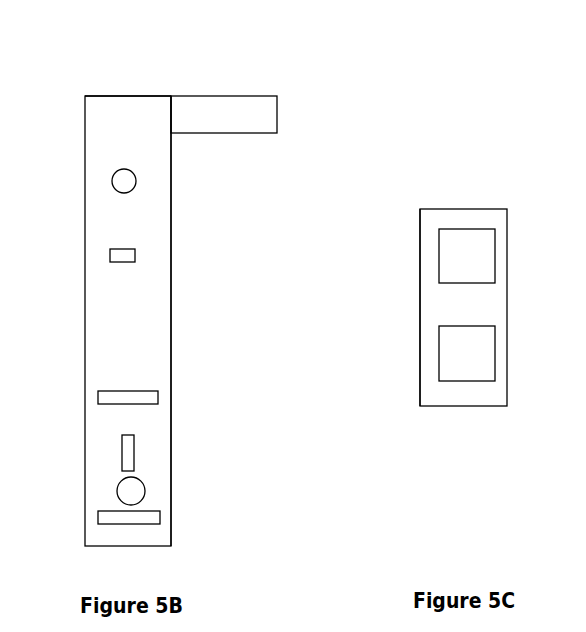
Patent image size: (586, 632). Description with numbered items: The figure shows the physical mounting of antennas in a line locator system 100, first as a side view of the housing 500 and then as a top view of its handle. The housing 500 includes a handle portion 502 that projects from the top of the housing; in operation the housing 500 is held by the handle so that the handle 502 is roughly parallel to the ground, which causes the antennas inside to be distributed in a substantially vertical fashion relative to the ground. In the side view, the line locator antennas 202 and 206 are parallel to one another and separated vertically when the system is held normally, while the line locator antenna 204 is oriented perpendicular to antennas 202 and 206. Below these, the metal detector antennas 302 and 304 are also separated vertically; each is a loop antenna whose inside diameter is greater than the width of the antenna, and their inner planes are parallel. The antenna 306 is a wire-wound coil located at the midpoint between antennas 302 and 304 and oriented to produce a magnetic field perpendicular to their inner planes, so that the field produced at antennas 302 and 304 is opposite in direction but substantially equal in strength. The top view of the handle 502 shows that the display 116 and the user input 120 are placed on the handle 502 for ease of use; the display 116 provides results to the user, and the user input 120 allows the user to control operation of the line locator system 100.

In FIG. 5B, the line locator system 100 is at (80, 107).
In FIG. 5C, the line locator system 100 is at (514, 229).
In FIG. 5B, the housing 500 is at (117, 96).
In FIG. 5B, the handle portion 502 is at (229, 96).
In FIG. 5C, the handle portion 502 is at (427, 219).
In FIG. 5B, the line locator antenna 202 is at (117, 182).
In FIG. 5B, the line locator antenna 204 is at (130, 257).
In FIG. 5B, the metal detector antenna 302 is at (157, 391).
In FIG. 5B, the antenna 306 is at (129, 452).
In FIG. 5B, the line locator antenna 206 is at (127, 484).
In FIG. 5B, the metal detector antenna 304 is at (167, 514).
In FIG. 5C, the display 116 is at (467, 256).
In FIG. 5C, the user input 120 is at (467, 353).